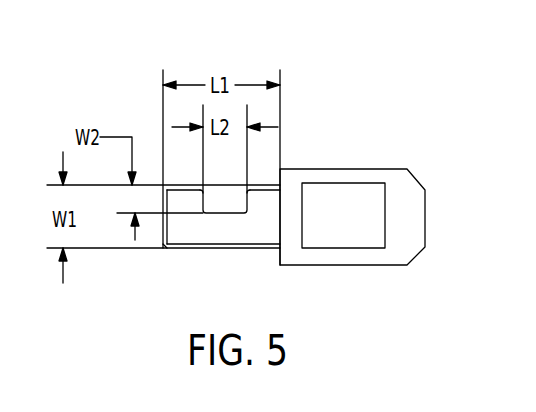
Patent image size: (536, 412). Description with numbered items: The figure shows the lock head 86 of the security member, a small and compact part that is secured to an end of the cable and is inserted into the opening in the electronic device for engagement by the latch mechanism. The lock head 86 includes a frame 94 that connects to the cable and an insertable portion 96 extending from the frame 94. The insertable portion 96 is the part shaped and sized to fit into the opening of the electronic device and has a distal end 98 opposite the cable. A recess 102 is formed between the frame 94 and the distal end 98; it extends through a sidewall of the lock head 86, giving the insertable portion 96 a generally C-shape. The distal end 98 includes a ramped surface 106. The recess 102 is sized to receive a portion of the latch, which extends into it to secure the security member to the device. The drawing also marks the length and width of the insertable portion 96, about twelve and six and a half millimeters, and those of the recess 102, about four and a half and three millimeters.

The lock head 86 is at (331, 107).
The frame 94 is at (403, 180).
The insertable portion 96 is at (262, 236).
The distal end 98 is at (166, 244).
The recess 102 is at (224, 215).
The ramped surface 106 is at (176, 188).